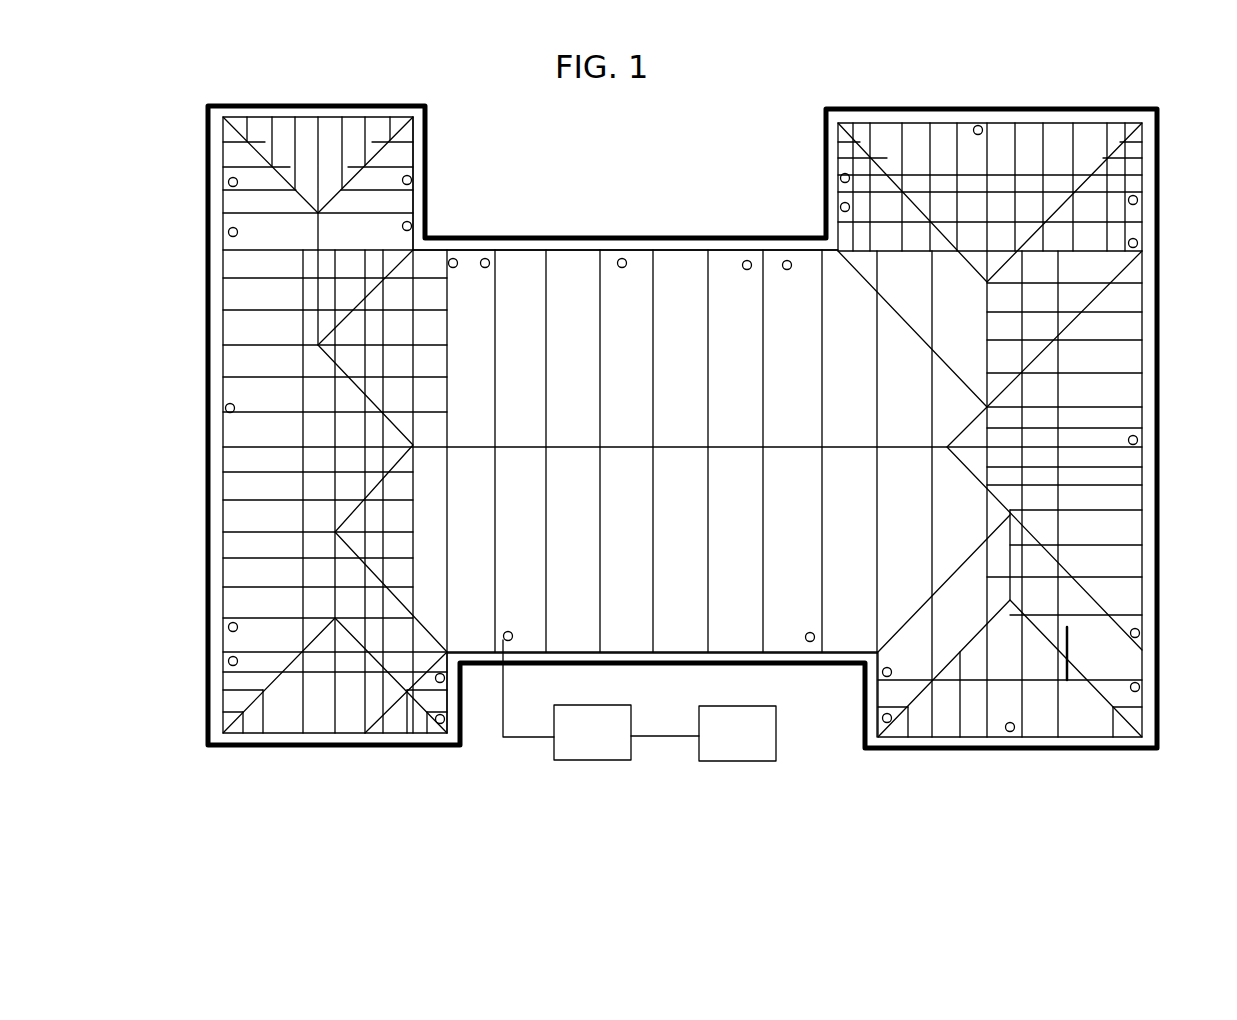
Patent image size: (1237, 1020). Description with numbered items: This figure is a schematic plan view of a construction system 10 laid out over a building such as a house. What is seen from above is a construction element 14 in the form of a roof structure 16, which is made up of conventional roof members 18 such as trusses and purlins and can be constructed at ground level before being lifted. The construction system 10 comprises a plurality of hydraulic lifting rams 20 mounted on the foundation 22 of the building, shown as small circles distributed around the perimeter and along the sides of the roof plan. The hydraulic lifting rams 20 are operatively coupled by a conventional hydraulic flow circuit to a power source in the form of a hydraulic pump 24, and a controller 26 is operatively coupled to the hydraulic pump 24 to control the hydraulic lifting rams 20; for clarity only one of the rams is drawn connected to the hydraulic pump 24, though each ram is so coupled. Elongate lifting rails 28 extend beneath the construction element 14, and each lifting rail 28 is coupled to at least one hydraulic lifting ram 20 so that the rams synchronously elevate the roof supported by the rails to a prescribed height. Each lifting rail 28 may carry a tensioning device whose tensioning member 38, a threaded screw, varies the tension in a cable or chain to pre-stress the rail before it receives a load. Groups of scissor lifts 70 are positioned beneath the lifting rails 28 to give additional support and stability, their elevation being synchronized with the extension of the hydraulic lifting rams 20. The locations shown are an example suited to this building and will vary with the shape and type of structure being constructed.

The construction system 10 is at (1162, 173).
The construction element 14 is at (1113, 337).
The roof structure 16 is at (1097, 407).
The roof members 18 is at (1090, 652).
The hydraulic lifting rams 20 is at (623, 258).
The foundation 22 is at (353, 155).
The hydraulic pump 24 is at (626, 732).
The controller 26 is at (737, 733).
The elongate lifting rail 28 is at (303, 117).
The tensioning member 38 is at (318, 733).
The scissor lifts 70 is at (233, 182).